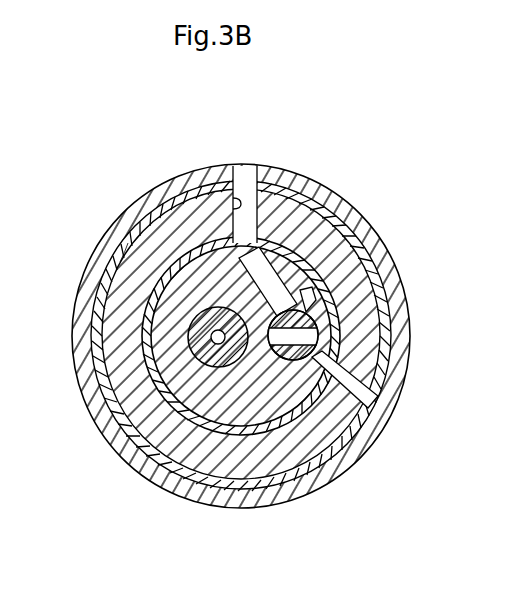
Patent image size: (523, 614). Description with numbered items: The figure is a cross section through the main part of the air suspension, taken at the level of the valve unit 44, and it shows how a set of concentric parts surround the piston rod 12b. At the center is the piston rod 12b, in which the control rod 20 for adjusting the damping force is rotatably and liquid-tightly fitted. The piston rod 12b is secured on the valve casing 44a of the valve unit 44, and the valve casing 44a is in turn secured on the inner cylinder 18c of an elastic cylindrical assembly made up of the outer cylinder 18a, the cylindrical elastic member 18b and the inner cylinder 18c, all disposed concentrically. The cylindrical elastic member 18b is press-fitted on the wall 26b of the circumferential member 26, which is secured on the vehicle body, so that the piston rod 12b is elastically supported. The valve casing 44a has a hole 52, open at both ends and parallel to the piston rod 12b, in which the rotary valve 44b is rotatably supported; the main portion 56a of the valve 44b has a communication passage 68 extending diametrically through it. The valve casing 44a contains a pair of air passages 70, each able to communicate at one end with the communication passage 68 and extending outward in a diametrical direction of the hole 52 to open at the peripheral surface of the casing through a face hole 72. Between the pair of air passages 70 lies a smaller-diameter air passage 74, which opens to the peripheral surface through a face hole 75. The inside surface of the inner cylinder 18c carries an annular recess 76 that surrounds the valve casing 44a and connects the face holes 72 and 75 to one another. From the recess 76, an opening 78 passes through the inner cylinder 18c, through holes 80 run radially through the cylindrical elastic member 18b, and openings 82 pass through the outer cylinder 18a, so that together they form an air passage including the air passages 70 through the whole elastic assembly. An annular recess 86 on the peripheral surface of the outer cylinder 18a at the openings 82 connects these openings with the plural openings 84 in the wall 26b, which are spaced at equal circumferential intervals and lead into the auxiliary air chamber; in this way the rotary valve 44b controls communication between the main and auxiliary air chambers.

The piston rod 12b is at (96, 410).
The outer cylinder 18a is at (352, 420).
The cylindrical elastic member 18b is at (125, 243).
The inner cylinder 18c is at (148, 288).
The control rod 20 is at (200, 336).
The circumferential member 26 is at (296, 513).
The wall 26b is at (397, 343).
The valve unit 44 is at (348, 176).
The valve casing 44a is at (150, 480).
The rotary valve 44b is at (373, 284).
The hole 52 is at (309, 194).
The main portion 56a is at (235, 472).
The communication passage 68 is at (350, 322).
The air passages 70 is at (150, 262).
The face hole 72 is at (195, 258).
The air passage 74 is at (370, 236).
The face hole 75 is at (362, 226).
The annular recess 76 is at (200, 448).
The opening 78 is at (296, 182).
The through holes 80 is at (222, 180).
The openings 82 is at (243, 180).
The openings 84 is at (252, 166).
The annular recess 86 is at (272, 170).